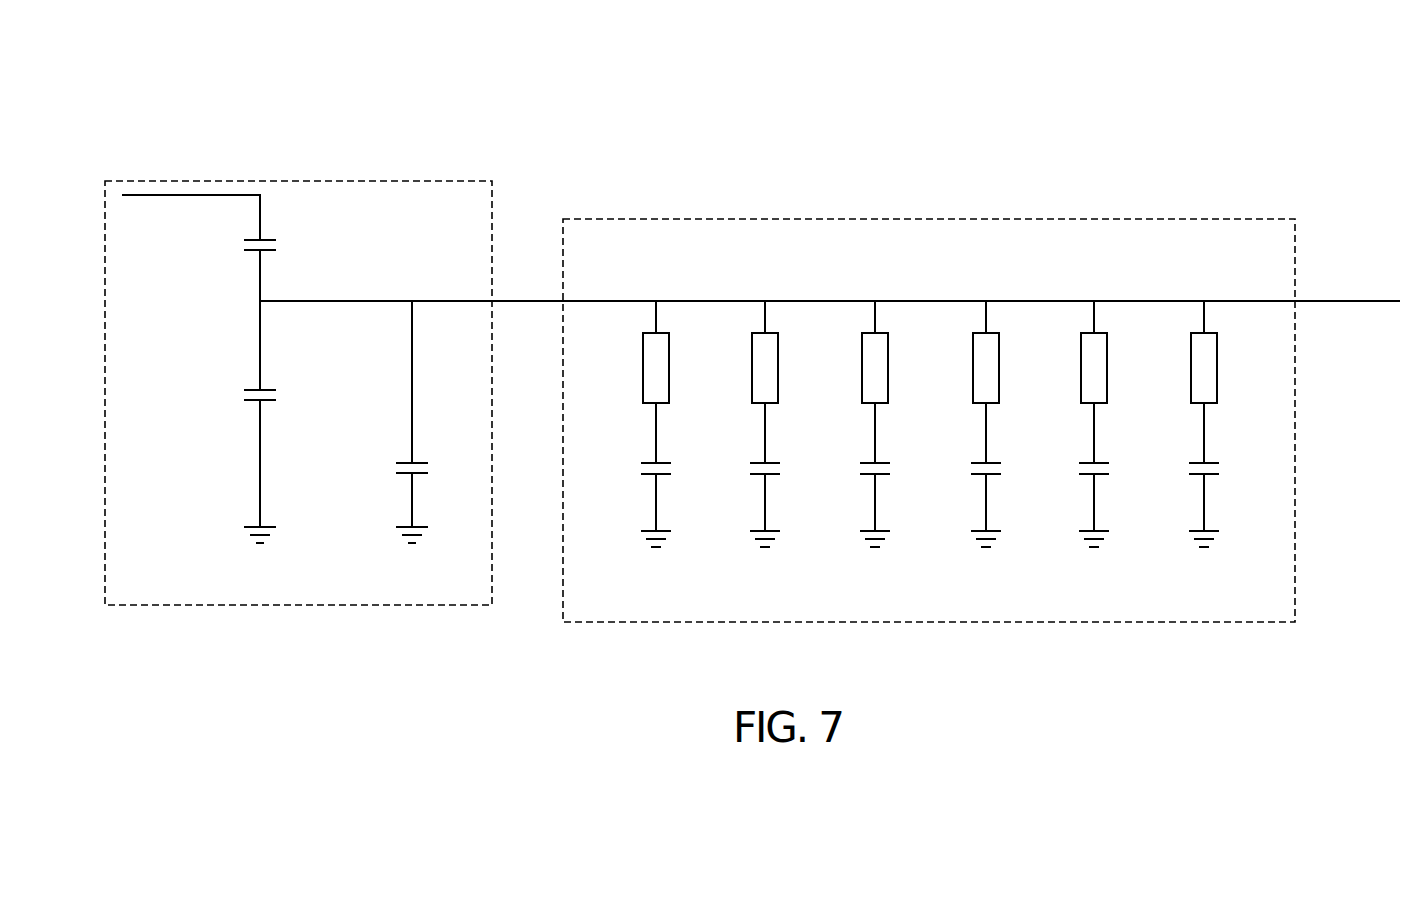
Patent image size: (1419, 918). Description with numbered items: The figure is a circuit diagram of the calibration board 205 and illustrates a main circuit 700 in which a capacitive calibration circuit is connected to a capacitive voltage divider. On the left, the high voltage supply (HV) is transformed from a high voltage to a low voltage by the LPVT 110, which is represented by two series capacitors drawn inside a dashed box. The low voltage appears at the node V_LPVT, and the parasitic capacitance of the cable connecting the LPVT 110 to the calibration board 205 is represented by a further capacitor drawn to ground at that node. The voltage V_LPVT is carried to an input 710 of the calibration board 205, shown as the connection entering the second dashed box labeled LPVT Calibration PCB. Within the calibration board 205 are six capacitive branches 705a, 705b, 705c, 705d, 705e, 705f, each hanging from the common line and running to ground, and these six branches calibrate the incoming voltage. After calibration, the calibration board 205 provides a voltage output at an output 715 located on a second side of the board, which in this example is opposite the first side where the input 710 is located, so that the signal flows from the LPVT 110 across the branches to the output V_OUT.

The main circuit 700 is at (224, 34).
The LPVT 110 is at (355, 181).
The calibration board 205 is at (661, 219).
The input 710 is at (518, 302).
The output 715 is at (1355, 302).
The capacitive branch 705a is at (656, 550).
The capacitive branch 705b is at (765, 550).
The capacitive branch 705c is at (875, 550).
The capacitive branch 705d is at (986, 550).
The capacitive branch 705e is at (1094, 550).
The capacitive branch 705f is at (1204, 550).